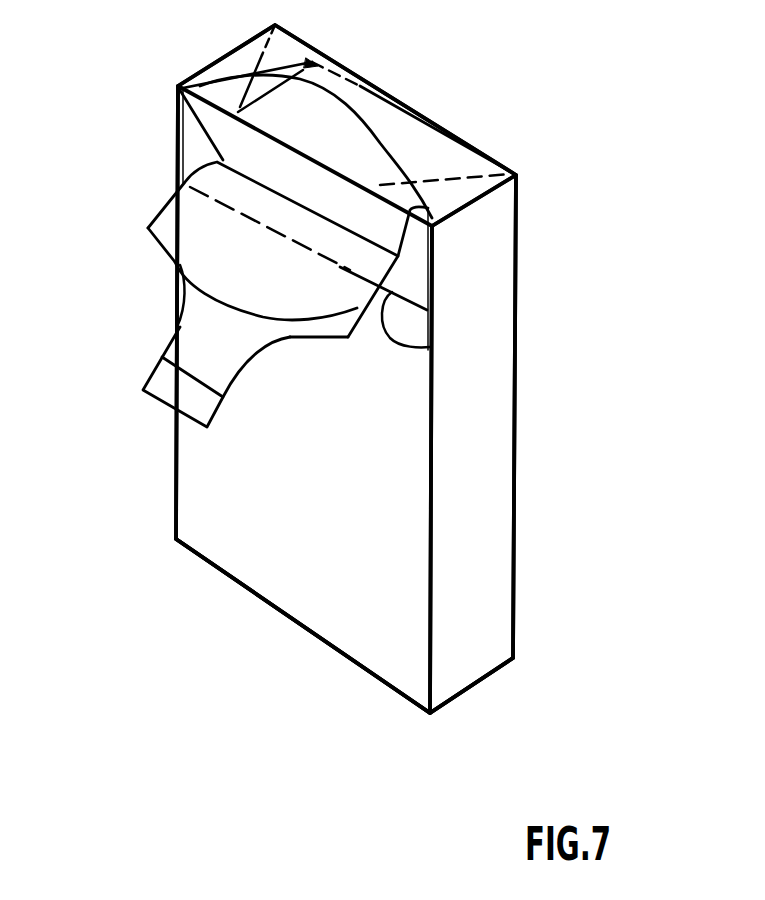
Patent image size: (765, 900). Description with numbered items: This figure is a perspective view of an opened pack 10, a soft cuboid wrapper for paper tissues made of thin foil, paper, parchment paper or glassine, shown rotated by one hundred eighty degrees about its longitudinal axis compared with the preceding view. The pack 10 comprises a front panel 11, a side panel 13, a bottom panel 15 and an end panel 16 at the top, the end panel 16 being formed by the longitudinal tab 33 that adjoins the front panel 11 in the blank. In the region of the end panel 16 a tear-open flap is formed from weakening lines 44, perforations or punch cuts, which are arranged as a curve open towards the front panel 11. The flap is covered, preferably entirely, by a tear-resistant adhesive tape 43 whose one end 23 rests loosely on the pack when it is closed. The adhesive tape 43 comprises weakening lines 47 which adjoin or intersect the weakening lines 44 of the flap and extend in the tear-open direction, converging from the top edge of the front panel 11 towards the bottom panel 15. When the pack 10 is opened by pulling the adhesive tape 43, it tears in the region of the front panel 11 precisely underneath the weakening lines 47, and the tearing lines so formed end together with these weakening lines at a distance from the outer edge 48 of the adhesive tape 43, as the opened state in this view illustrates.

The pack 10 is at (627, 145).
The front panel 11 is at (326, 510).
The side panel 13 is at (485, 512).
The bottom panel 15 is at (286, 637).
The end panel 16 is at (434, 101).
The end of the adhesive tape 23 is at (147, 389).
The longitudinal tab 33 is at (435, 130).
The adhesive tape 43 is at (205, 307).
The weakening lines 44 is at (332, 90).
The weakening lines of the adhesive tape 47 is at (400, 238).
The outer edge of the adhesive tape 48 is at (436, 345).